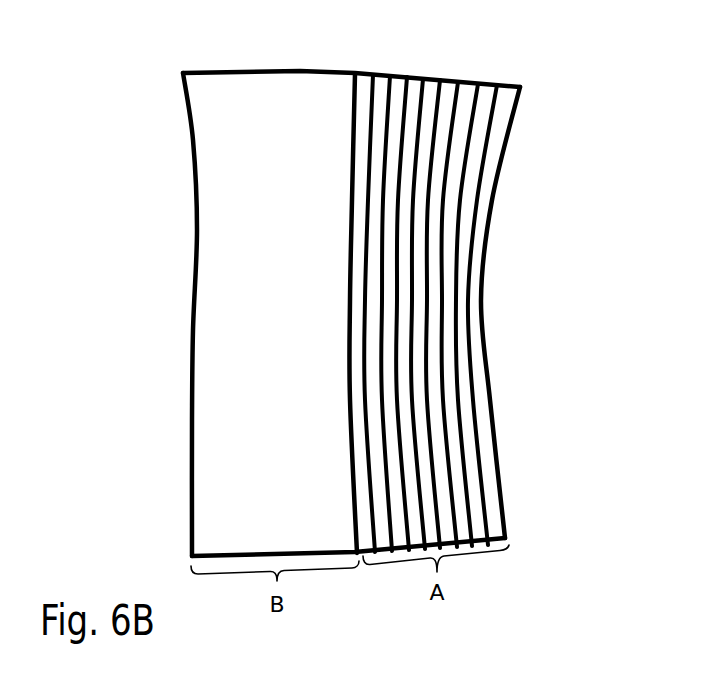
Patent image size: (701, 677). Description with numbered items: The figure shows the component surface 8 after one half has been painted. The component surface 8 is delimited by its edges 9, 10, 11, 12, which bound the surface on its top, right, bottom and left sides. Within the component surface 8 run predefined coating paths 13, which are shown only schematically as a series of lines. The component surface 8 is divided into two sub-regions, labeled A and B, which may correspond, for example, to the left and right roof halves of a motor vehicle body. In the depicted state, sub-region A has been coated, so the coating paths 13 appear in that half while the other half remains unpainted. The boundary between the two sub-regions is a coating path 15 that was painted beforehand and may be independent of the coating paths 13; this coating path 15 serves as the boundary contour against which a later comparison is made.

The component surface 8 is at (137, 276).
The edge 9 is at (329, 70).
The edge 10 is at (495, 430).
The edge 11 is at (314, 552).
The edge 12 is at (195, 192).
The coating paths 13 is at (455, 353).
The coating path 15 is at (348, 256).